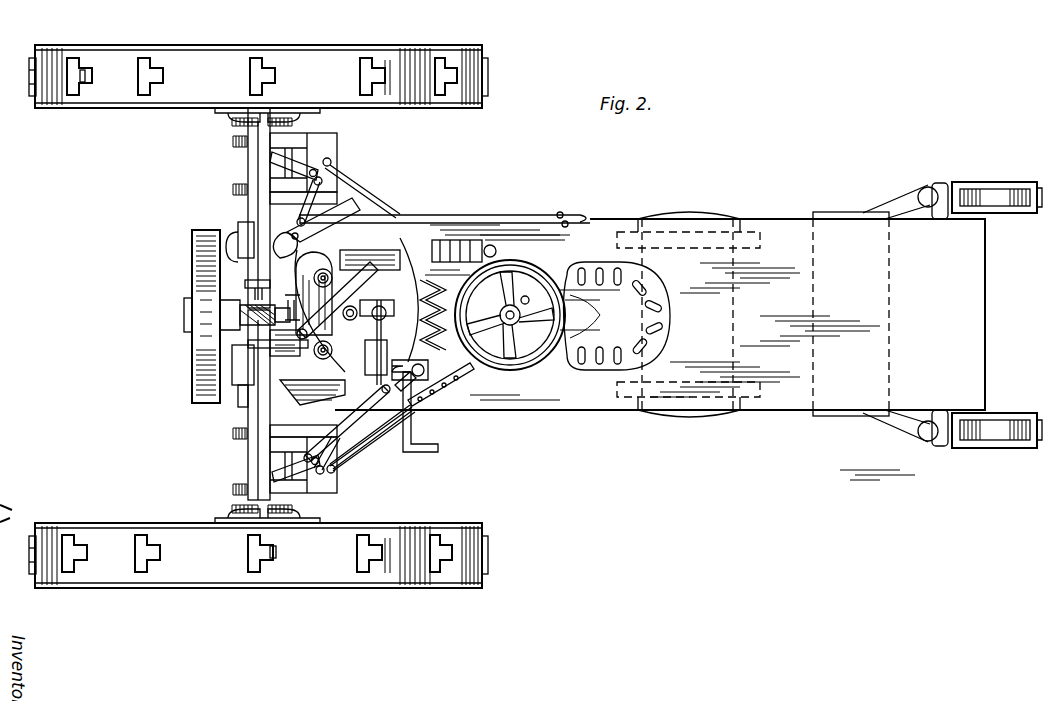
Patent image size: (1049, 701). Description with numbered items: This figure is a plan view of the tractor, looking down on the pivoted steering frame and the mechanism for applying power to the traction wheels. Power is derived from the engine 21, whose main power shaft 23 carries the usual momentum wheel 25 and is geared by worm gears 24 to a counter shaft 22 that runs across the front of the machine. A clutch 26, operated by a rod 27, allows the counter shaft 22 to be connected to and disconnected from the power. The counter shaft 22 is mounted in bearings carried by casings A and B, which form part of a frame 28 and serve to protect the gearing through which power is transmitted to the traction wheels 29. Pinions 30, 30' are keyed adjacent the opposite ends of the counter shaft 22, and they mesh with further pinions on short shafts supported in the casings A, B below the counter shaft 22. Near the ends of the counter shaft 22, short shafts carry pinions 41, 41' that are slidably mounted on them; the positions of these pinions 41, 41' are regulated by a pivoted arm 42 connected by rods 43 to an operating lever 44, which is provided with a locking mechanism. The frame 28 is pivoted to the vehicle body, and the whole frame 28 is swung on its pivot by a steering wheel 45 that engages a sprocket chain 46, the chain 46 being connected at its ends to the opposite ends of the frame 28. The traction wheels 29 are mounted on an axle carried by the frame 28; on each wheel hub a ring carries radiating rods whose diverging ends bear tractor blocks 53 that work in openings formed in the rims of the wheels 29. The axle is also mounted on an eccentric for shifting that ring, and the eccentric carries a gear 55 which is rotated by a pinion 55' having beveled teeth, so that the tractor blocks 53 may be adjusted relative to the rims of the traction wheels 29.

The engine 21 is at (408, 232).
The counter shaft 22 is at (256, 232).
The main power shaft 23 is at (232, 310).
The worm gears 24 is at (250, 297).
The momentum wheel 25 is at (191, 347).
The clutch 26 is at (243, 382).
The rod 27 is at (375, 400).
The frame 28 is at (340, 148).
The traction wheels 29 is at (305, 52).
The pinion 30 is at (218, 190).
The pinion 30' is at (218, 435).
The pinion 41 is at (222, 141).
The pinion 41' is at (218, 493).
The pivoted arm 42 is at (310, 152).
The rods 43 is at (352, 192).
The operating lever 44 is at (545, 215).
The steering wheel 45 is at (530, 375).
The sprocket chain 46 is at (440, 397).
The tractor blocks 53 is at (137, 77).
The gear 55 is at (233, 295).
The pinion 55' is at (307, 307).
The casing A is at (249, 168).
The casing B is at (249, 466).